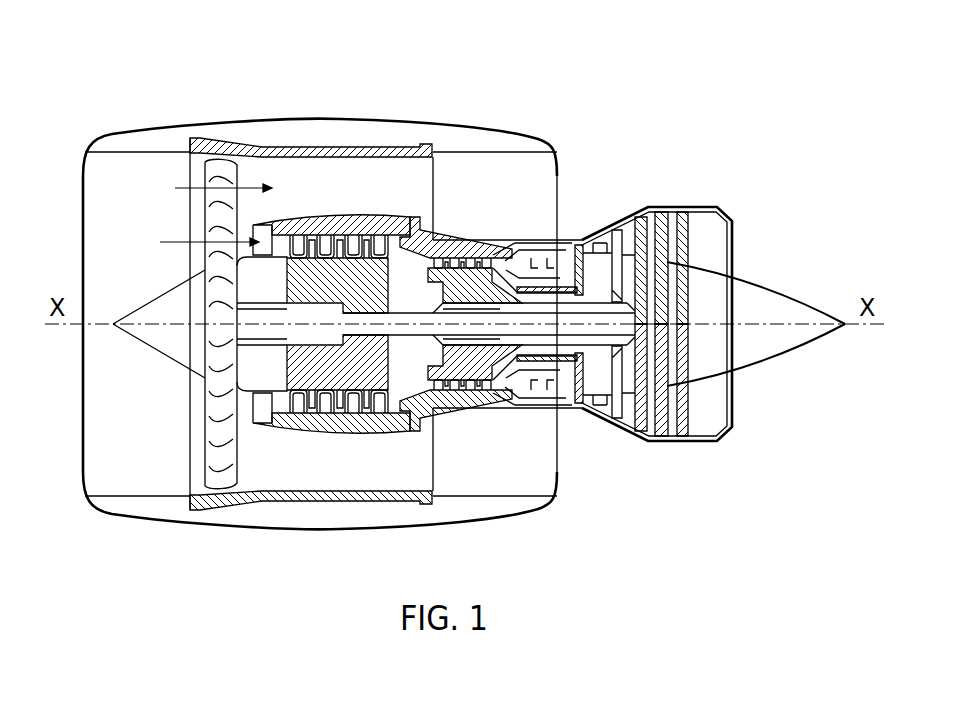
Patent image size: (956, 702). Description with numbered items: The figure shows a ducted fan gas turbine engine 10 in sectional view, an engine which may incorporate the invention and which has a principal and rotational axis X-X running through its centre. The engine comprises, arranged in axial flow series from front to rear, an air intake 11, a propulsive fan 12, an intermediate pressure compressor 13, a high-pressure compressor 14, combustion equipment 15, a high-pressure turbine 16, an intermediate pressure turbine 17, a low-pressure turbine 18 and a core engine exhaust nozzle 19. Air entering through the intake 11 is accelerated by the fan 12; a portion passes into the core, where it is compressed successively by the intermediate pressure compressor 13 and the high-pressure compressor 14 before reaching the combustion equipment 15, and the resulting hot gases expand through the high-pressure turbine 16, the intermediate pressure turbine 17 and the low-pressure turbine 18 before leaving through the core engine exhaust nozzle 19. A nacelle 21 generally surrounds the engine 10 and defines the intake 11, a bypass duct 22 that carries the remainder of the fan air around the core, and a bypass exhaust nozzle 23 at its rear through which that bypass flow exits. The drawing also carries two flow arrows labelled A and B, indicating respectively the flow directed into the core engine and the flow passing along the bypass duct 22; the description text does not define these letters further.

The ducted fan gas turbine engine 10 is at (130, 87).
The air intake 11 is at (133, 152).
The propulsive fan 12 is at (217, 448).
The intermediate pressure compressor 13 is at (365, 434).
The high-pressure compressor 14 is at (458, 258).
The combustion equipment 15 is at (520, 395).
The high-pressure turbine 16 is at (572, 412).
The intermediate pressure turbine 17 is at (613, 233).
The low-pressure turbine 18 is at (624, 436).
The core engine exhaust nozzle 19 is at (723, 205).
The nacelle 21 is at (357, 128).
The bypass duct 22 is at (514, 190).
The bypass exhaust nozzle 23 is at (557, 148).
The primary (core) airflow A is at (199, 241).
The secondary (bypass) airflow B is at (212, 188).